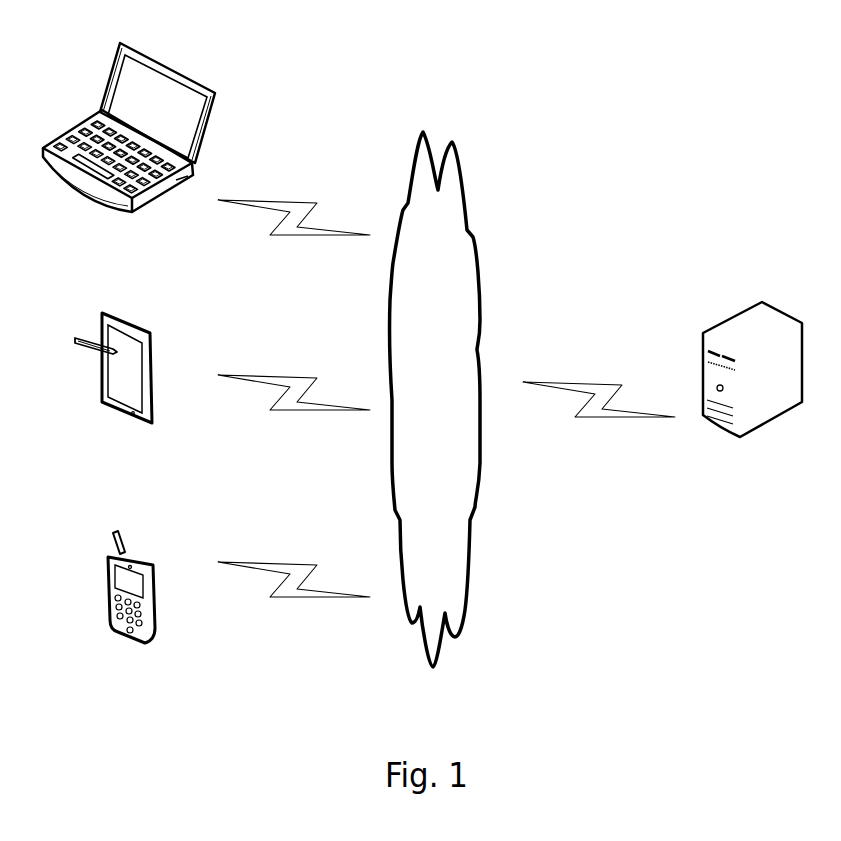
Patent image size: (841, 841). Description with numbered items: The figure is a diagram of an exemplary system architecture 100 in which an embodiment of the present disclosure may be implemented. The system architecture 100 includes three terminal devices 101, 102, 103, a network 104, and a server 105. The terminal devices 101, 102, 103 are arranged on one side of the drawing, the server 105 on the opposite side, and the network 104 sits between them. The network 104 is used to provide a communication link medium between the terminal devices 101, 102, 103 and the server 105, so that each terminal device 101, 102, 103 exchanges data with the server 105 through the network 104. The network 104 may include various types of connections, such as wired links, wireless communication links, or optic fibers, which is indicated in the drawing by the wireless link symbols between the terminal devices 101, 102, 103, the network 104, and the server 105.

The system architecture 100 is at (708, 32).
The terminal device 101 is at (131, 609).
The terminal device 102 is at (113, 389).
The terminal device 103 is at (129, 148).
The network 104 is at (435, 399).
The server 105 is at (752, 394).